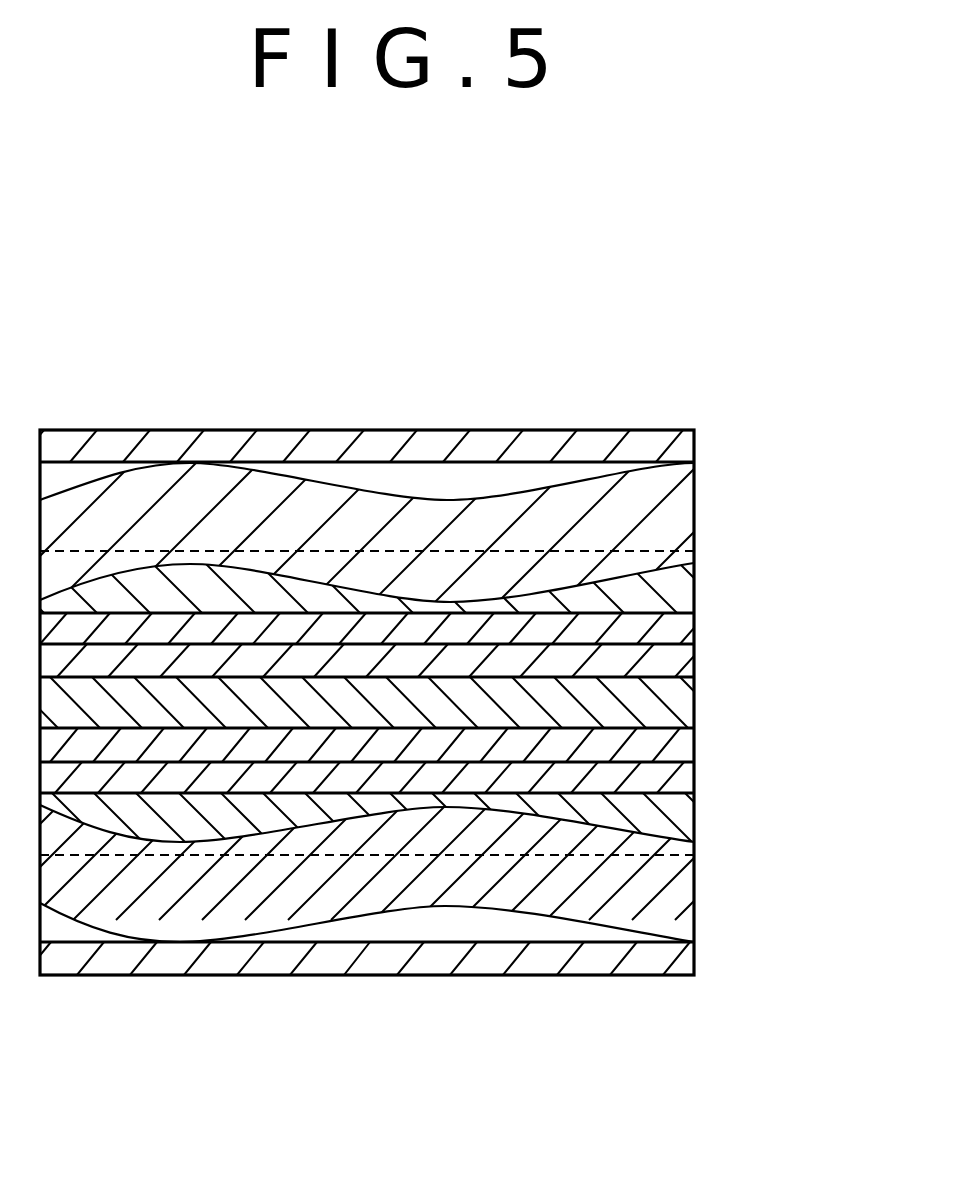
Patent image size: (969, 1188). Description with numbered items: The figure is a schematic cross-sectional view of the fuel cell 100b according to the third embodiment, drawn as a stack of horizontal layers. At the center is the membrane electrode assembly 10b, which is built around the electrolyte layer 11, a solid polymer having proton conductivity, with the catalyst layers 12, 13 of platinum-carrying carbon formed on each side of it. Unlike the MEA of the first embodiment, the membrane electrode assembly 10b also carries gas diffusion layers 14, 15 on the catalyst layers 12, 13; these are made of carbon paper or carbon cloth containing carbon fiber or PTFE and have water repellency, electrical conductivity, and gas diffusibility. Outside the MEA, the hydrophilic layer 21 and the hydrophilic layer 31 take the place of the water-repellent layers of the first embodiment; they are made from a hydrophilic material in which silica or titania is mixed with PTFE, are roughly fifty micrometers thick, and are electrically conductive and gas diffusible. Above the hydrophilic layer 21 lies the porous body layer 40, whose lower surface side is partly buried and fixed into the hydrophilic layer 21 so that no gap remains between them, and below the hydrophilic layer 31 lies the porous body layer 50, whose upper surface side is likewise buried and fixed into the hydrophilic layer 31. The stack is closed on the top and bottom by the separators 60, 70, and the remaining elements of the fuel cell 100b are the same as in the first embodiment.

The fuel cell 100b is at (605, 419).
The separator 60 is at (694, 449).
The porous body layer 40 is at (694, 508).
The hydrophilic layer 21 is at (695, 553).
The membrane electrode assembly 10b is at (805, 590).
The gas diffusion layer 14 is at (695, 632).
The catalyst layer 12 is at (695, 665).
The electrolyte layer 11 is at (695, 705).
The catalyst layer 13 is at (695, 748).
The gas diffusion layer 15 is at (695, 782).
The hydrophilic layer 31 is at (695, 794).
The porous body layer 50 is at (695, 893).
The separator 70 is at (695, 963).